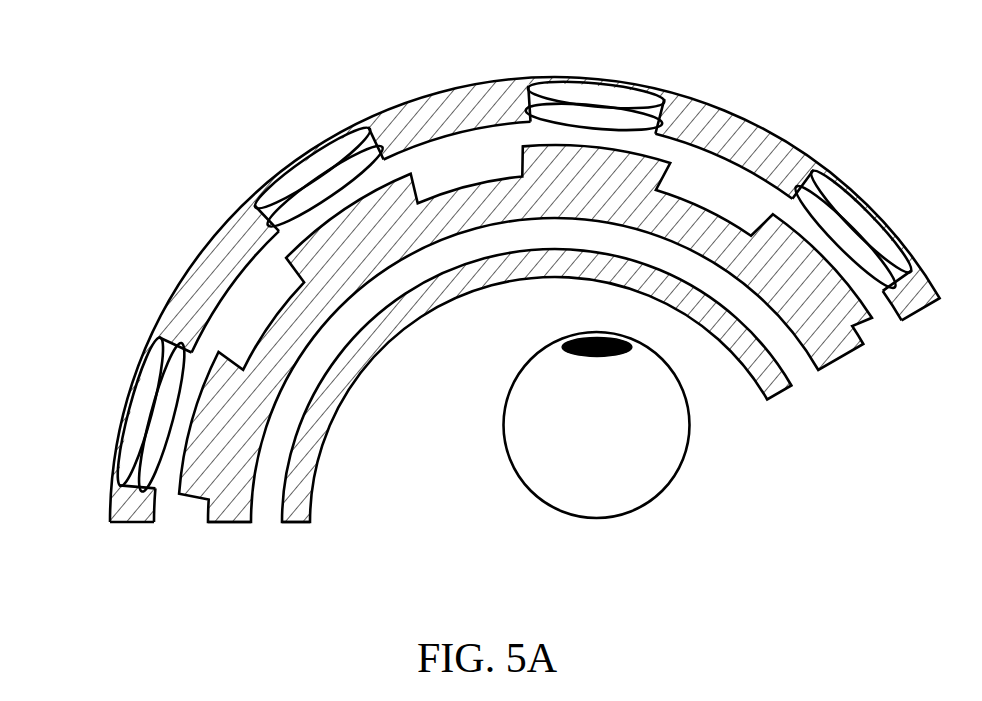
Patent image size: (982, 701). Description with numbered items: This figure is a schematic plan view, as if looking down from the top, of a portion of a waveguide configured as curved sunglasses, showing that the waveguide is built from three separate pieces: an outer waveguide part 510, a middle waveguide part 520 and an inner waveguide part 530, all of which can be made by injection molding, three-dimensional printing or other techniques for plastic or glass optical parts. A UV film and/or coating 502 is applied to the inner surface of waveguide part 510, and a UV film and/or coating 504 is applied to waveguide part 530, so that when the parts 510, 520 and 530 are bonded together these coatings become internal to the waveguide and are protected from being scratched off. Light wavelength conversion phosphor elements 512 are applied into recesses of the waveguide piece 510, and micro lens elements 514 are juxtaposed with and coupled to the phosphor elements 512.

The UV film and/or coating 502 is at (486, 303).
The UV film and/or coating 504 is at (524, 428).
The waveguide part 510 is at (113, 490).
The light wavelength conversion phosphor element 512 is at (307, 155).
The micro lens element 514 is at (257, 222).
The waveguide part 520 is at (230, 523).
The waveguide part 530 is at (315, 428).